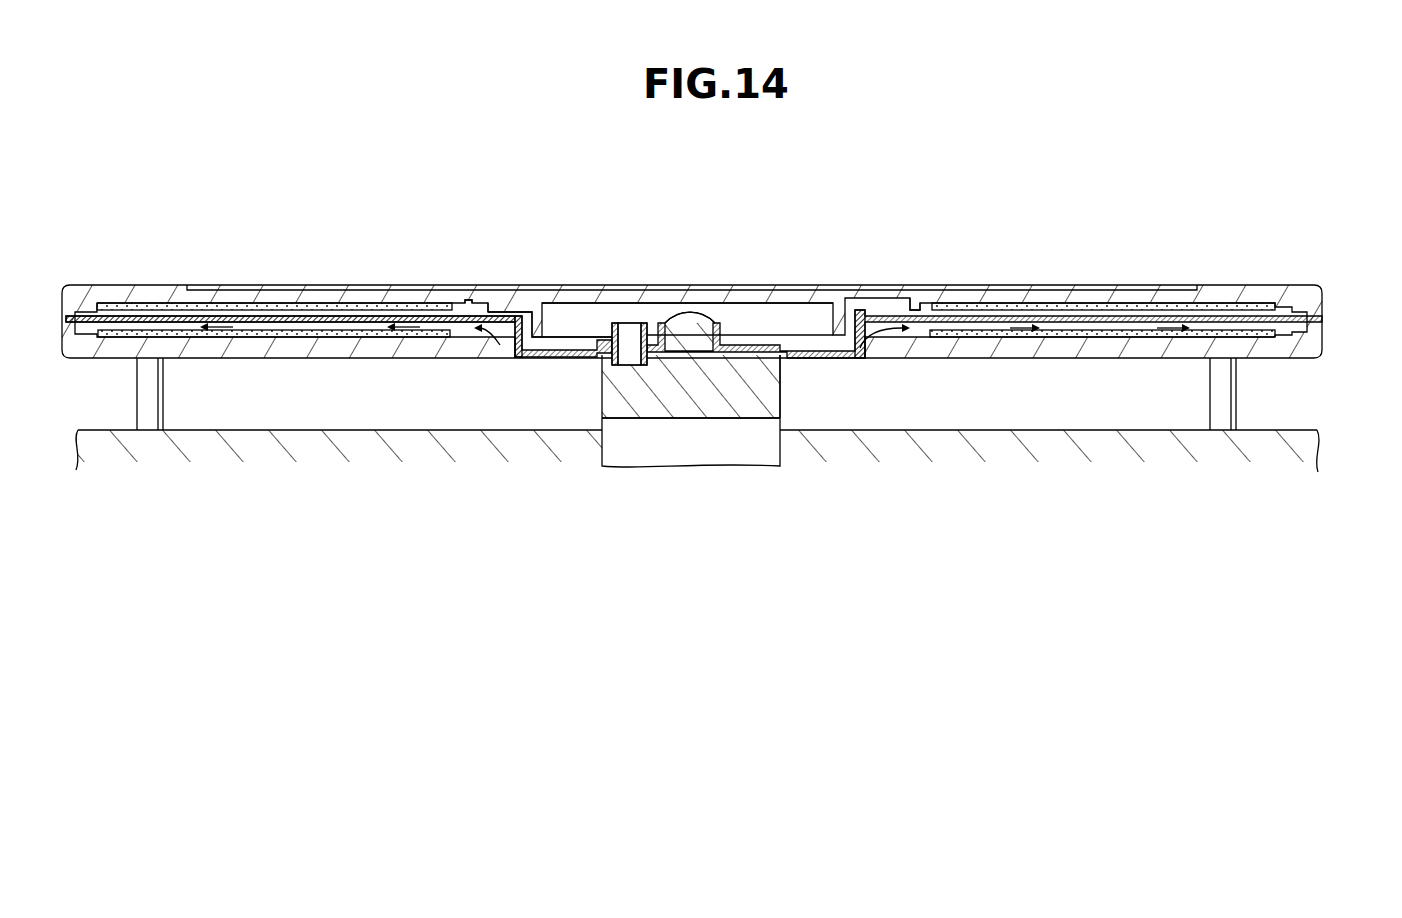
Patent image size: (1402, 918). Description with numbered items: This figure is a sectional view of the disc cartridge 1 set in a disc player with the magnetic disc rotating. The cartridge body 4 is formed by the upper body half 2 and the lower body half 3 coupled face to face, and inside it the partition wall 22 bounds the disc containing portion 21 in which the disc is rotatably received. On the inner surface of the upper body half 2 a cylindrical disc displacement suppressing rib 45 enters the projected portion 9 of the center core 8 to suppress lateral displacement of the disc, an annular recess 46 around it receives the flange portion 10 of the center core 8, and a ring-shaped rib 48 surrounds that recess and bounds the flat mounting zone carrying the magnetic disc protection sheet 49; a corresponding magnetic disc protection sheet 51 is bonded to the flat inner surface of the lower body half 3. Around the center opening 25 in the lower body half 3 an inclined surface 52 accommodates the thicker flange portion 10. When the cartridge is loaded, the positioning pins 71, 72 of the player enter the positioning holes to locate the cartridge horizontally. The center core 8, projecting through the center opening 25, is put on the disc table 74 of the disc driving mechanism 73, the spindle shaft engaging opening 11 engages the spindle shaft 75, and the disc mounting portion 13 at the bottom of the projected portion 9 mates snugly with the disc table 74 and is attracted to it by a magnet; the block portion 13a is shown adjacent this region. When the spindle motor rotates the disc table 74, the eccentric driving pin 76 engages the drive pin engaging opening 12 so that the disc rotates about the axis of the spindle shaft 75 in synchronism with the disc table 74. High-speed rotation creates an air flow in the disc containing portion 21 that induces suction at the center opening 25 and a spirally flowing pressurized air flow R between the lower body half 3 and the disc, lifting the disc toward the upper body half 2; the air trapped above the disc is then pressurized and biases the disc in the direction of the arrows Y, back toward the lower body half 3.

The disc cartridge 1 is at (1288, 274).
The upper body half 2 is at (1314, 300).
The lower body half 3 is at (1314, 348).
The cartridge body 4 is at (1360, 275).
The center core 8 is at (547, 357).
The projected portion 9 is at (518, 357).
The flange portion 10 is at (514, 305).
The spindle shaft engaging opening 11 is at (735, 300).
The drive pin engaging opening 12 is at (629, 330).
The disc mounting portion 13 is at (615, 400).
The support block portion 13a is at (848, 357).
The disc containing portion 21 is at (207, 308).
The partition wall 22 is at (79, 349).
The center opening 25 is at (503, 352).
The disc displacement suppressing rib 45 is at (584, 335).
The annular recess 46 is at (497, 310).
The ring-shaped rib 48 is at (476, 300).
The magnetic disc protection sheet 49 is at (1213, 308).
The magnetic disc protection sheet 51 is at (1133, 340).
The inclined surface 52 is at (482, 333).
The positioning pin 71 is at (167, 395).
The positioning pin 72 is at (1236, 396).
The disc driving mechanism 73 is at (764, 396).
The disc table 74 is at (603, 414).
The spindle shaft 75 is at (698, 322).
The driving pin 76 is at (631, 326).
The arrows Y is at (168, 320).
The air flow R is at (385, 337).